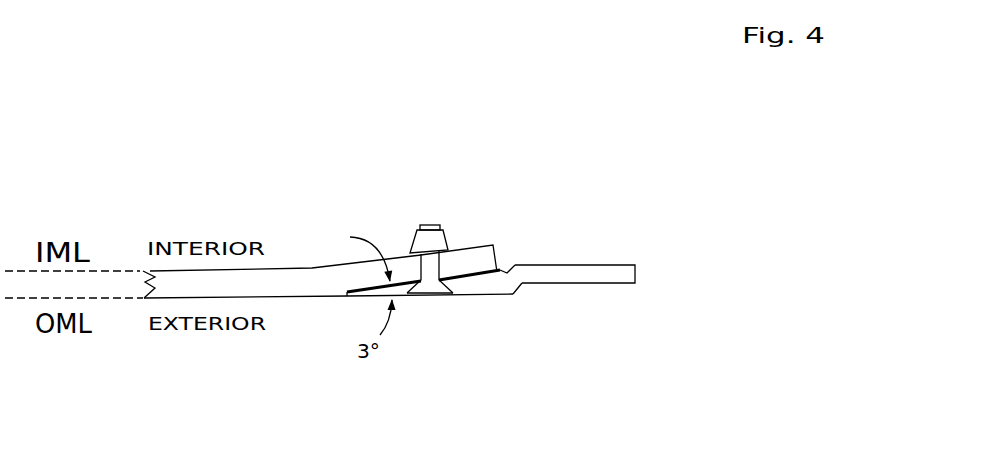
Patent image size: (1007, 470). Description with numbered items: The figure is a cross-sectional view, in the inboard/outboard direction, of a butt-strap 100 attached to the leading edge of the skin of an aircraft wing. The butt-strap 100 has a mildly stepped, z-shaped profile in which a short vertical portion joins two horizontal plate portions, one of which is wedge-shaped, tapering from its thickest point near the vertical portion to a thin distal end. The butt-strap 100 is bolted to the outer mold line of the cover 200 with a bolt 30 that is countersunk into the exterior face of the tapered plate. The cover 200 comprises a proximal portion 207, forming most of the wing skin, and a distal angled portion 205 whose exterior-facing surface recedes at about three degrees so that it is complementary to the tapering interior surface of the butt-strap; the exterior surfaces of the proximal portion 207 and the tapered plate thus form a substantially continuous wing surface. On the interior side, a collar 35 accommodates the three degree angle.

The cover 200 is at (328, 171).
The proximal portion 207 is at (296, 267).
The distal angled portion 205 is at (485, 243).
The collar 35 is at (415, 224).
The bolt 30 is at (428, 280).
The butt-strap 100 is at (601, 310).